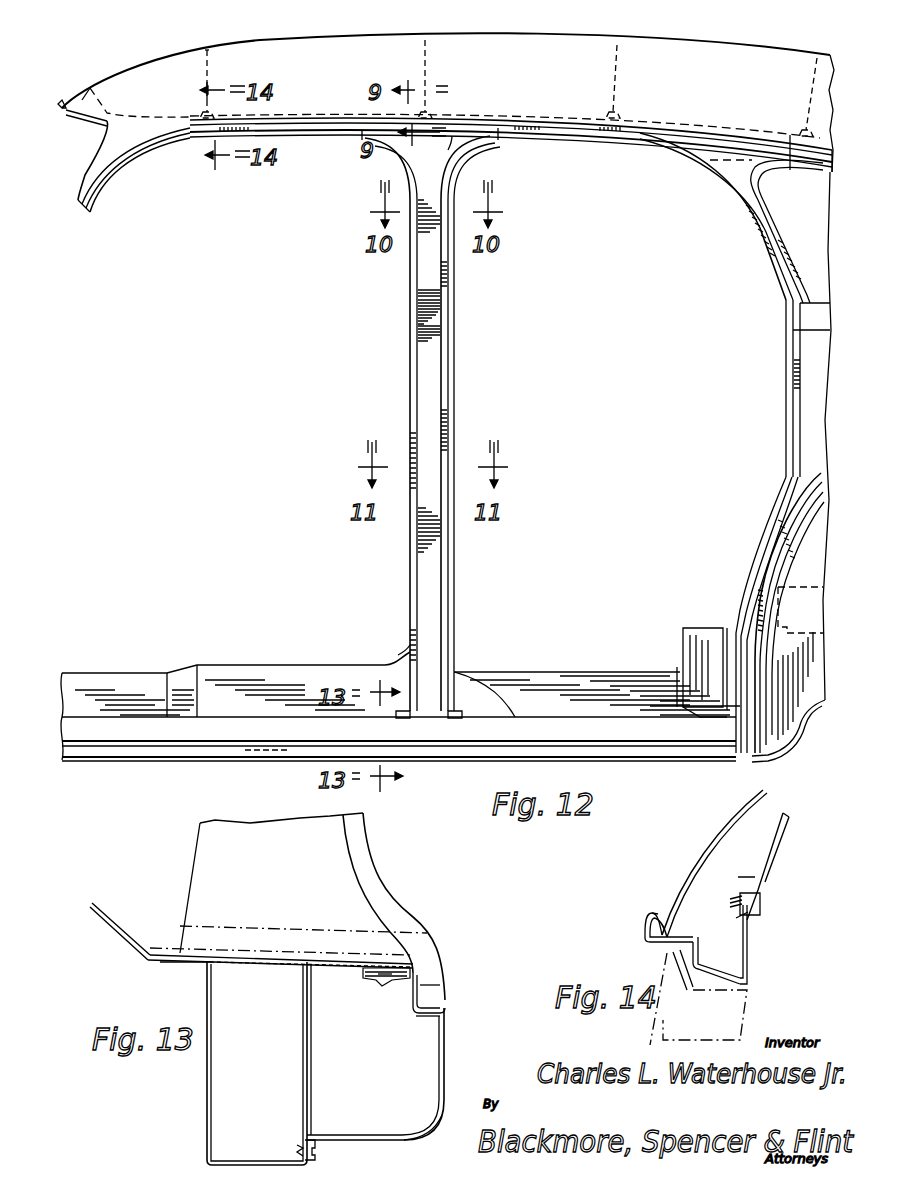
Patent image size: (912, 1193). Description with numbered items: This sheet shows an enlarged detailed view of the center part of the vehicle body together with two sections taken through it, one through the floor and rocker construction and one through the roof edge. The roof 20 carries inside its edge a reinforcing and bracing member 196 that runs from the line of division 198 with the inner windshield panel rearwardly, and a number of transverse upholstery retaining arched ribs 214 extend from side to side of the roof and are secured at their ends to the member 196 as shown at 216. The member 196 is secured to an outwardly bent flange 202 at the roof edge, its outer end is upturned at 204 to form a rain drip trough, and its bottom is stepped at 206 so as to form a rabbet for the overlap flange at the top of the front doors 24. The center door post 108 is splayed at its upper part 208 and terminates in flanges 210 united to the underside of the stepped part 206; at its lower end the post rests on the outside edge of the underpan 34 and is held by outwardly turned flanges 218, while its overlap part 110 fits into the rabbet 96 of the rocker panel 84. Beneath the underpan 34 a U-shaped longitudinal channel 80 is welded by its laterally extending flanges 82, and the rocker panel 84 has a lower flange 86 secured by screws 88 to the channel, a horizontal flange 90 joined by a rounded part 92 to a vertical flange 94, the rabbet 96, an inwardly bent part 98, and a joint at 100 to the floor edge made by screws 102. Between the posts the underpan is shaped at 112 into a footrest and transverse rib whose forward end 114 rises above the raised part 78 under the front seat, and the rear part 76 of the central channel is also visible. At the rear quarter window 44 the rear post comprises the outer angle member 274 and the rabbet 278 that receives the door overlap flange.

In FIG. 12, the roof 20 is at (535, 46).
In FIG. 14, the roof 20 is at (746, 808).
In FIG. 12, the transverse upholstery retaining arched ribs 214 is at (436, 45).
In FIG. 14, the transverse upholstery retaining arched ribs 214 is at (812, 825).
In FIG. 12, the reinforcing and bracing member 196 is at (308, 130).
In FIG. 14, the reinforcing and bracing member 196 is at (746, 965).
In FIG. 12, the line of division 198 is at (192, 130).
In FIG. 12, the flanges 210 is at (360, 142).
In FIG. 12, the splayed part 208 is at (455, 136).
In FIG. 12, the center door post 108 is at (425, 373).
In FIG. 13, the center door post 108 is at (218, 842).
In FIG. 12, the outer angle member 274 is at (752, 203).
In FIG. 12, the rear quarter window 44 is at (785, 140).
In FIG. 12, the rabbet 278 is at (795, 310).
In FIG. 12, the raised part 78 is at (258, 673).
In FIG. 13, the raised part 78 is at (122, 920).
In FIG. 12, the rabbet 96 is at (118, 720).
In FIG. 13, the rabbet 96 is at (420, 1013).
In FIG. 12, the rocker panel 84 is at (168, 742).
In FIG. 13, the rocker panel 84 is at (445, 1068).
In FIG. 12, the forward end 114 is at (405, 653).
In FIG. 12, the shaped part 112 is at (502, 690).
In FIG. 12, the rear part of channel 76 is at (650, 672).
In FIG. 12, the outwardly turned flanges 218 is at (452, 718).
In FIG. 13, the outwardly turned flanges 218 is at (232, 957).
In FIG. 13, the underpan 34 is at (93, 903).
In FIG. 13, the laterally extending flanges 82 is at (198, 962).
In FIG. 13, the screws 102 is at (388, 965).
In FIG. 13, the joint at floor panel edge 100 is at (375, 972).
In FIG. 13, the overlap part 110 is at (432, 982).
In FIG. 13, the inwardly bent part 98 is at (418, 997).
In FIG. 13, the vertical flange 94 is at (440, 1036).
In FIG. 13, the U-shaped longitudinal channels 80 is at (207, 1108).
In FIG. 13, the horizontal flange 90 is at (362, 1138).
In FIG. 13, the rounded part 92 is at (432, 1126).
In FIG. 13, the lower flange 86 is at (300, 1146).
In FIG. 13, the screws 88 is at (316, 1156).
In FIG. 14, the upturned outer end 204 is at (648, 920).
In FIG. 14, the outwardly bent flange 202 is at (657, 913).
In FIG. 14, the stepped part 206 is at (720, 930).
In FIG. 14, the rib securing point 216 is at (760, 905).
In FIG. 14, the front doors 24 is at (672, 975).